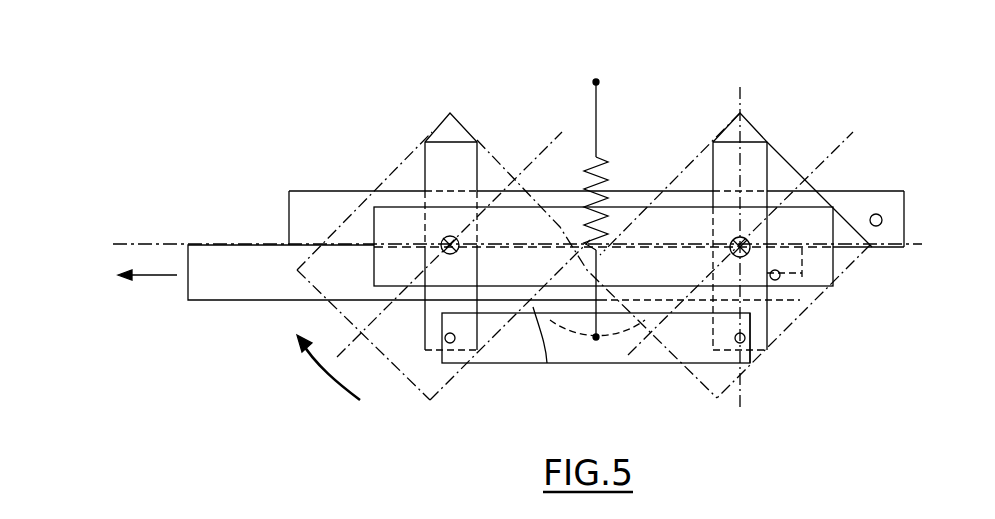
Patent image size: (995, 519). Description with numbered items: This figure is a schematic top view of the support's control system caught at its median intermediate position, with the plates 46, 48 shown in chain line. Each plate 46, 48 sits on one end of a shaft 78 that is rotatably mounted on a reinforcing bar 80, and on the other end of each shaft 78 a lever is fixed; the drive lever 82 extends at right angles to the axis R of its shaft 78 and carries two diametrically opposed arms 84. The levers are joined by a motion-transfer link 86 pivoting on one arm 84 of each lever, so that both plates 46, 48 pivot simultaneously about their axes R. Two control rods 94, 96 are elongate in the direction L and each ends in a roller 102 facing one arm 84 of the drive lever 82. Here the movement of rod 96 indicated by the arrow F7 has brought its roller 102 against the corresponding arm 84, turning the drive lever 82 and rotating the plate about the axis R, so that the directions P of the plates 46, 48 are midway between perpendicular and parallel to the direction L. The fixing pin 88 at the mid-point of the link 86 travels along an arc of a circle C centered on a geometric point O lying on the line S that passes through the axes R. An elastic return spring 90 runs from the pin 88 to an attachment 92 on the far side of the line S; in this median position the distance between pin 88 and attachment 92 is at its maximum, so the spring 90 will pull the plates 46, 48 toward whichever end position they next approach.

The plate 46 is at (792, 165).
The plate 48 is at (460, 120).
The shaft 78 is at (447, 240).
The reinforcing bar 80 is at (384, 270).
The drive lever 82 is at (761, 158).
The arm 84 is at (758, 340).
The motion-transfer link 86 is at (522, 348).
The fixing pin 88 is at (577, 338).
The elastic return spring 90 is at (596, 113).
The attachment 92 is at (596, 82).
The control rod 94 is at (318, 208).
The control rod 96 is at (232, 266).
The roller 102 is at (878, 228).
The direction of the plate P is at (542, 154).
The axis R is at (458, 252).
The geometric point O is at (600, 256).
The line S is at (652, 240).
The circle C is at (547, 363).
The direction L is at (133, 243).
The arrow F7 is at (156, 277).